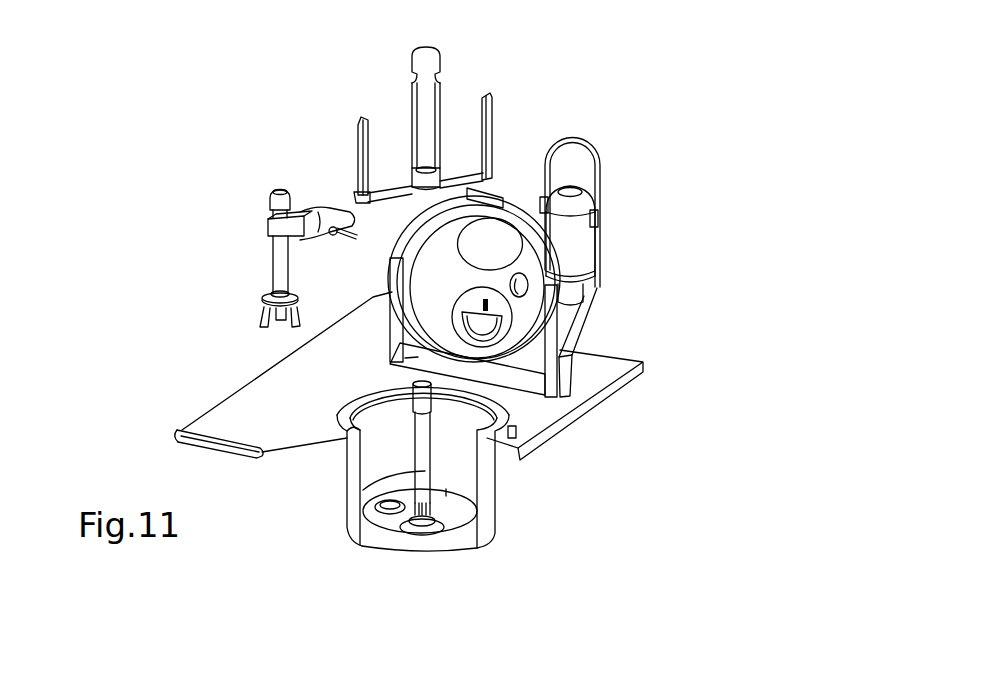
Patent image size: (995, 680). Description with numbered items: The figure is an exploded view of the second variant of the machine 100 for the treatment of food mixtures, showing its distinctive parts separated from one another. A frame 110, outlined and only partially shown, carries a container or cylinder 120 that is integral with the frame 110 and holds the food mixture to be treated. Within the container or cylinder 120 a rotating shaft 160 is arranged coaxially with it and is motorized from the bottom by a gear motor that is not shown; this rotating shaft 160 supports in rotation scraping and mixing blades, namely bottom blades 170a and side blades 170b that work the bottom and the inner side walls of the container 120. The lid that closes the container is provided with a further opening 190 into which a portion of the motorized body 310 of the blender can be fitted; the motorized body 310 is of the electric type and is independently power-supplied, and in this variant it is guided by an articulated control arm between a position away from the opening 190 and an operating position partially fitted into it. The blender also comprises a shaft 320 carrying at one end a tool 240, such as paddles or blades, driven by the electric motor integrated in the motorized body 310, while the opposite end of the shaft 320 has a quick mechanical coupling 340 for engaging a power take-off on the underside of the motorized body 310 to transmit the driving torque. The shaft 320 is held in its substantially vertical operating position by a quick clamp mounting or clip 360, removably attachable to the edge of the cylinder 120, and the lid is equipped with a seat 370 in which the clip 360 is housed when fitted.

The machine 100 is at (600, 435).
The frame 110 is at (230, 408).
The container or cylinder 120 is at (500, 495).
The rotating shaft 160 is at (423, 473).
The bottom scraping and mixing blades 170a is at (457, 167).
The side scraping and mixing blades 170b is at (361, 128).
The opening 190 is at (538, 237).
The tool 240 is at (245, 298).
The motorized body 310 is at (575, 177).
The shaft 320 is at (256, 264).
The quick mechanical coupling 340 is at (284, 188).
The quick clamp mounting (clip) 360 is at (305, 200).
The seat 370 is at (578, 321).